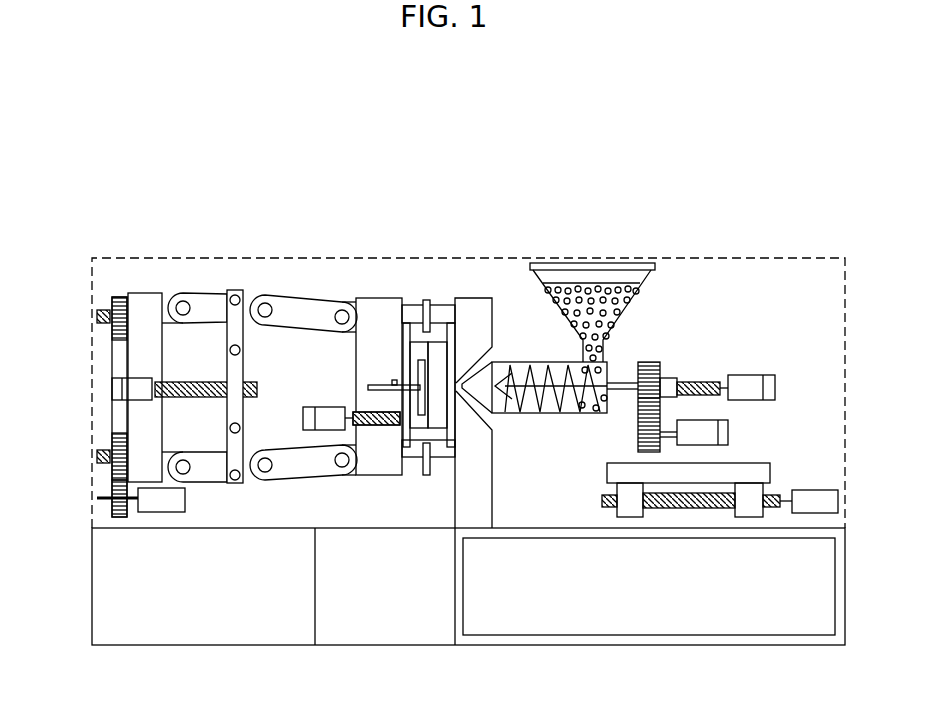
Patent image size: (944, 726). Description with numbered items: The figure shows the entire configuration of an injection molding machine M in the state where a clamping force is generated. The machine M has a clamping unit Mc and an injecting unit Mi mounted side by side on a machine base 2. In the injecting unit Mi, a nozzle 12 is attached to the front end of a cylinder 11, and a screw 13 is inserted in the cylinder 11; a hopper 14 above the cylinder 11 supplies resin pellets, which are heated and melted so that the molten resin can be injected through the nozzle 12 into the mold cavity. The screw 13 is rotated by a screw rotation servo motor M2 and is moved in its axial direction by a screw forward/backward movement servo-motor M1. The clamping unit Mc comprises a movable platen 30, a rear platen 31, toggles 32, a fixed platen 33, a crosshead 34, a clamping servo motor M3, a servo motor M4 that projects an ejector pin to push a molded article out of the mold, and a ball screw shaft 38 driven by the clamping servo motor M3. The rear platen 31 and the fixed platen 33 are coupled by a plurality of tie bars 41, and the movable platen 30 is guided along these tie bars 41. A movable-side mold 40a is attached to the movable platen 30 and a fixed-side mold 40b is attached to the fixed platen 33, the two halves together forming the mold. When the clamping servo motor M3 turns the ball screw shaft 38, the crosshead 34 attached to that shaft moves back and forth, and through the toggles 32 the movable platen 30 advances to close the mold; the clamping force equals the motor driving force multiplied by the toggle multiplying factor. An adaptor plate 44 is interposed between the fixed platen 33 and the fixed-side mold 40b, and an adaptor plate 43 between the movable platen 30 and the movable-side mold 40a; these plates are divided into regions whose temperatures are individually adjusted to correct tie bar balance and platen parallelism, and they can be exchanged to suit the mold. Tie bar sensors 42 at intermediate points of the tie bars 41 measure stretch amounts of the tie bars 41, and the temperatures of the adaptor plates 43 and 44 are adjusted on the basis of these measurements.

The machine base 2 is at (705, 645).
The cylinder 11 is at (563, 413).
The nozzle 12 is at (485, 348).
The screw 13 is at (510, 407).
The hopper 14 is at (623, 263).
The movable platen 30 is at (378, 298).
The rear platen 31 is at (138, 292).
The toggles 32 is at (310, 302).
The fixed platen 33 is at (467, 298).
The crosshead 34 is at (245, 422).
The ball screw shaft 38 is at (183, 395).
The movable-side mold 40a is at (420, 430).
The fixed-side mold 40b is at (440, 430).
The tie bars 41 is at (438, 305).
The tie bar sensors 42 is at (425, 300).
The adaptor plate 43 is at (403, 337).
The adaptor plate 44 is at (457, 427).
The injection molding machine M is at (760, 243).
The clamping unit Mc is at (220, 238).
The injecting unit Mi is at (587, 237).
The screw forward/backward movement servo-motor M1 is at (772, 375).
The screw rotation servo motor M2 is at (730, 440).
The clamping servo motor M3 is at (112, 392).
The servo motor M4 is at (325, 430).